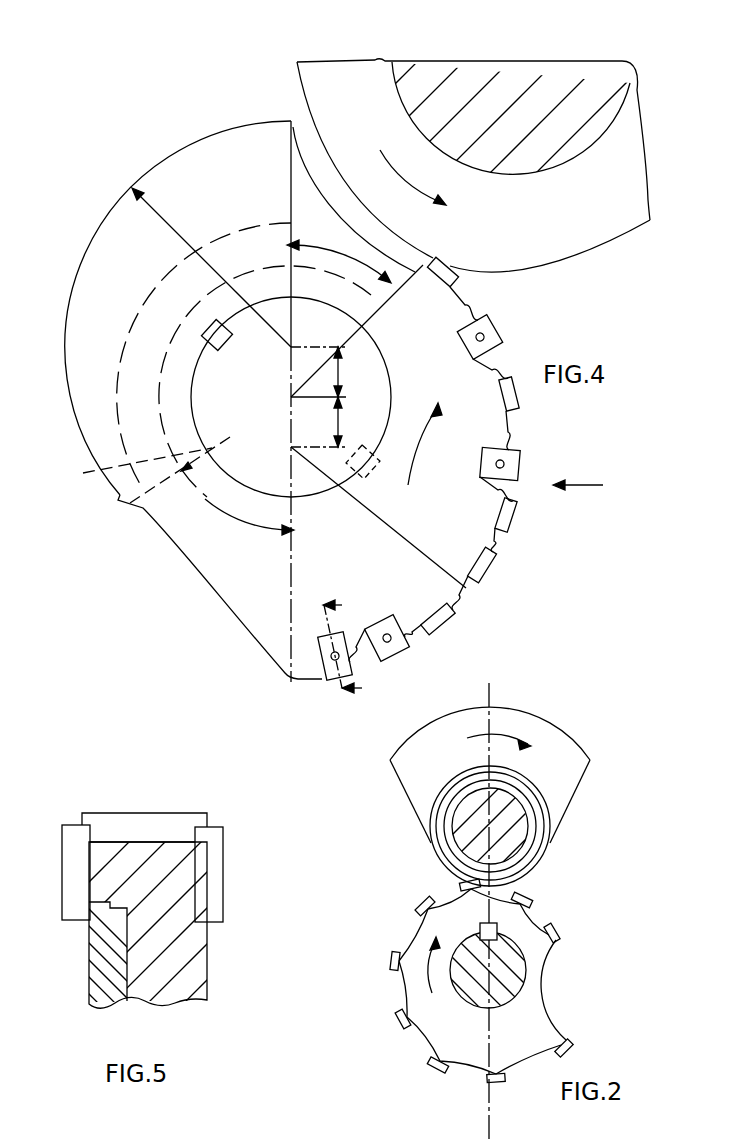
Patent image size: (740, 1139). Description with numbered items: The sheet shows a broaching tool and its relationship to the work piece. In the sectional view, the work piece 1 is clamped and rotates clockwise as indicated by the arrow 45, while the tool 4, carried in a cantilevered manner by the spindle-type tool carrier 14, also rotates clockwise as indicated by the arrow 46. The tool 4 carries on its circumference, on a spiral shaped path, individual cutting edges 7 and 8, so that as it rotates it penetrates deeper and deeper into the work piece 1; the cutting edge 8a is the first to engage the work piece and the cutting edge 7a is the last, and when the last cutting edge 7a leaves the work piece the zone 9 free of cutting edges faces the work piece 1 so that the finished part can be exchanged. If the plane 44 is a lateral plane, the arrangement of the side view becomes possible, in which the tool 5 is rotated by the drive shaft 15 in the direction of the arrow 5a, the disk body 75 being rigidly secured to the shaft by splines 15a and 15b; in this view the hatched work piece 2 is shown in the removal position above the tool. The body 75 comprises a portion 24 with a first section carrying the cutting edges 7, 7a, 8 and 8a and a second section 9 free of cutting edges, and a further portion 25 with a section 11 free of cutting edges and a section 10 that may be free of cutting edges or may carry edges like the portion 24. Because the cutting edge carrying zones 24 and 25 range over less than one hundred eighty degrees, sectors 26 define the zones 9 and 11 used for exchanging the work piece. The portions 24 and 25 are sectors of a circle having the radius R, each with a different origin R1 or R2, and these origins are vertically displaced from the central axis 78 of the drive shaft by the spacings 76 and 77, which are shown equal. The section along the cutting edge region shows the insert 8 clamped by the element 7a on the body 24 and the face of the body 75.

In FIG. 2, the work piece 1 is at (400, 569).
In FIG. 4, the workpiece 2 is at (613, 86).
In FIG. 2, the tool 4 is at (370, 569).
In FIG. 4, the tool 5 is at (463, 581).
In FIG. 4, the rotational arrow 5a is at (438, 425).
In FIG. 4, the cutting edges 7 is at (485, 341).
In FIG. 4, the last cutting edge 7a is at (330, 675).
In FIG. 2, the last cutting edge 7a is at (573, 1049).
In FIG. 5, the last cutting edge 7a is at (215, 860).
In FIG. 4, the cutting edges 8 is at (488, 568).
In FIG. 2, the cutting edges 8 is at (442, 1072).
In FIG. 5, the cutting edges 8 is at (183, 825).
In FIG. 4, the first cutting edge 8a is at (448, 278).
In FIG. 2, the first cutting edge 8a is at (561, 935).
In FIG. 4, the zone free of cutting edges 9 is at (340, 207).
In FIG. 2, the zone free of cutting edges 9 is at (585, 986).
In FIG. 4, the section 10 is at (174, 385).
In FIG. 4, the section free of cutting edges 11 is at (172, 566).
In FIG. 2, the tool carrier 14 is at (500, 950).
In FIG. 4, the drive shaft 15 is at (271, 434).
In FIG. 4, the spline 15a is at (211, 350).
In FIG. 4, the spline 15b is at (369, 477).
In FIG. 4, the portion 24 is at (460, 594).
In FIG. 5, the portion 24 is at (170, 988).
In FIG. 4, the portion 25 is at (228, 138).
In FIG. 4, the sectors 26 is at (334, 250).
In FIG. 2, the plane 44 is at (502, 686).
In FIG. 2, the arrow 45 is at (467, 738).
In FIG. 2, the arrow 46 is at (427, 969).
In FIG. 4, the body 75 is at (100, 466).
In FIG. 5, the body 75 is at (95, 1000).
In FIG. 4, the spacing 76 is at (347, 382).
In FIG. 4, the spacing 77 is at (347, 425).
In FIG. 4, the central axis 78 is at (289, 395).
In FIG. 4, the radius R is at (160, 223).
In FIG. 4, the origin R1 is at (294, 345).
In FIG. 4, the origin R2 is at (288, 449).